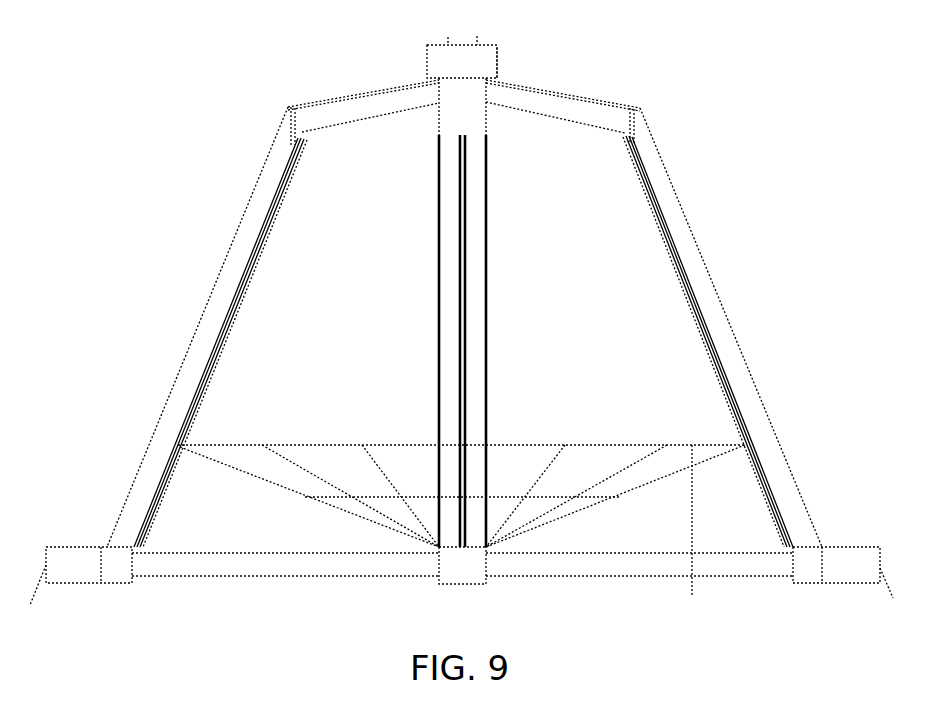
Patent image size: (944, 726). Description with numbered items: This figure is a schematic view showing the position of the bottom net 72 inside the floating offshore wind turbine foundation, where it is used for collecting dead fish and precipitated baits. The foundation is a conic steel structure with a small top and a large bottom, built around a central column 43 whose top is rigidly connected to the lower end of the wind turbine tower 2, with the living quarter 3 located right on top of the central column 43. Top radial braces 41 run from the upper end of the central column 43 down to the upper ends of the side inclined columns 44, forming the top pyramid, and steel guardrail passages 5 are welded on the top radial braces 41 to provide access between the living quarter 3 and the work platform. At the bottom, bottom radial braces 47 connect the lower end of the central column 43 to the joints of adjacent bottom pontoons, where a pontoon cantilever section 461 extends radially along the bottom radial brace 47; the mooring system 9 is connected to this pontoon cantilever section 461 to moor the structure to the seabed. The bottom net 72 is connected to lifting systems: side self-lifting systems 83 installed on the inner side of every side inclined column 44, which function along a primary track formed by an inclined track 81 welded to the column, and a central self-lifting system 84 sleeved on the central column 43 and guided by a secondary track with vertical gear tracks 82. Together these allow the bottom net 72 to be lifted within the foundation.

The wind turbine tower 2 is at (448, 37).
The living quarter 3 is at (497, 62).
The steel guardrail passage 5 is at (490, 90).
The top radial brace 41 is at (487, 82).
The central column 43 is at (487, 113).
The side inclined column 44 is at (701, 260).
The inclined track 81 is at (795, 540).
The vertical gear track 82 is at (460, 203).
The side self-lifting system 83 is at (744, 445).
The bottom net 72 is at (627, 470).
The bottom radial brace 47 is at (592, 577).
The central self-lifting system 84 is at (486, 548).
The pontoon cantilever section 461 is at (835, 548).
The mooring system 9 is at (880, 585).